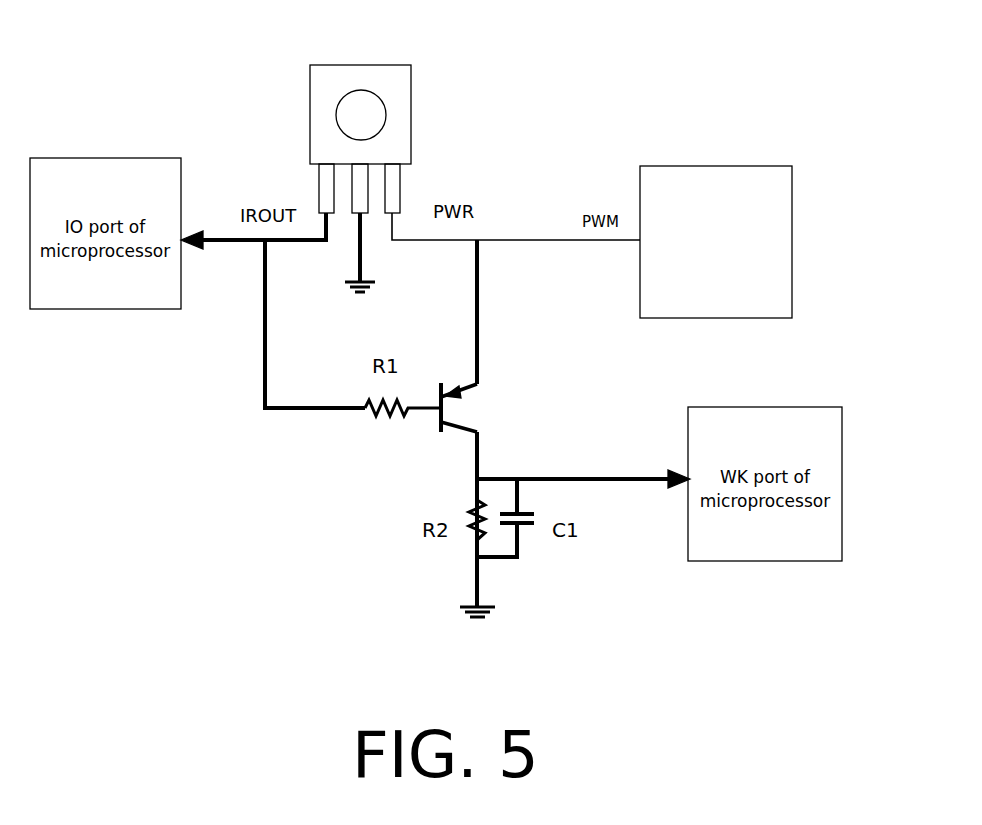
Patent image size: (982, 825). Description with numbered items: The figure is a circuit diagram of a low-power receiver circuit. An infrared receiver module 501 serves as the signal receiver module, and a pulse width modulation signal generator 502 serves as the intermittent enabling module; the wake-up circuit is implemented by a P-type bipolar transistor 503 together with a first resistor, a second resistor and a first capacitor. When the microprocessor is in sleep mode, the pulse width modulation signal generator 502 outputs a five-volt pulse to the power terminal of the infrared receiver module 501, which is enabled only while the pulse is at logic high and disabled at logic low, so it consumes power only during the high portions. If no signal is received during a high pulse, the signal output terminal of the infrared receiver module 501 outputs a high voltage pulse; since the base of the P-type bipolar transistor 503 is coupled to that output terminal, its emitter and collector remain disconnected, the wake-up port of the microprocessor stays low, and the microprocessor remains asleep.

The infrared receiver module 501 is at (310, 114).
The PWM signal generator 502 is at (715, 166).
The P-type bipolar transistor 503 is at (450, 433).